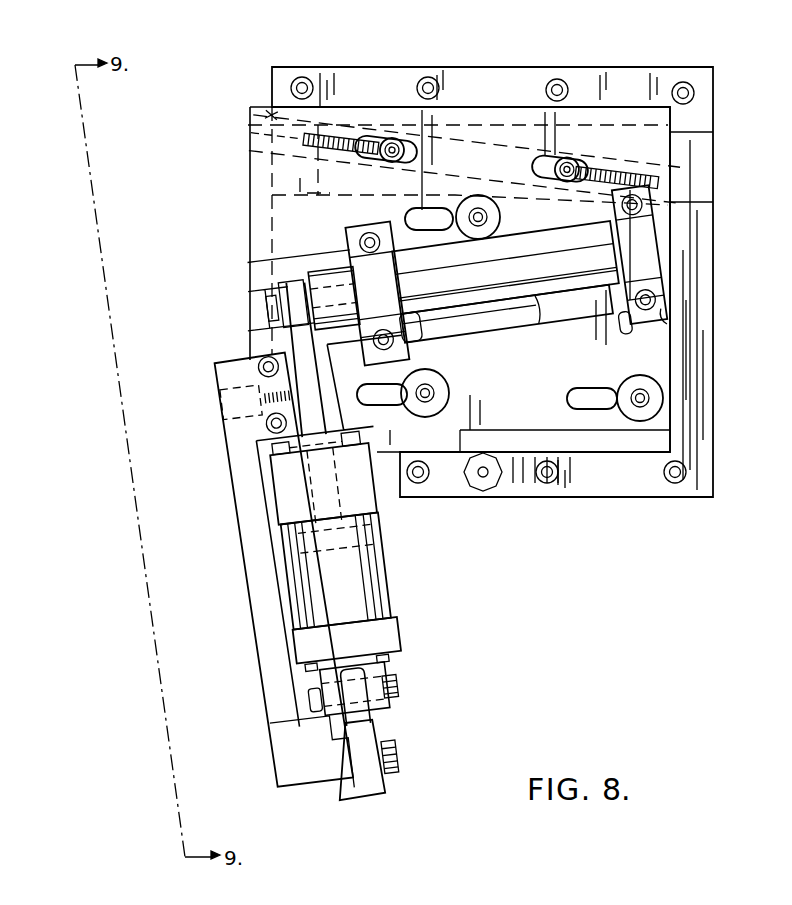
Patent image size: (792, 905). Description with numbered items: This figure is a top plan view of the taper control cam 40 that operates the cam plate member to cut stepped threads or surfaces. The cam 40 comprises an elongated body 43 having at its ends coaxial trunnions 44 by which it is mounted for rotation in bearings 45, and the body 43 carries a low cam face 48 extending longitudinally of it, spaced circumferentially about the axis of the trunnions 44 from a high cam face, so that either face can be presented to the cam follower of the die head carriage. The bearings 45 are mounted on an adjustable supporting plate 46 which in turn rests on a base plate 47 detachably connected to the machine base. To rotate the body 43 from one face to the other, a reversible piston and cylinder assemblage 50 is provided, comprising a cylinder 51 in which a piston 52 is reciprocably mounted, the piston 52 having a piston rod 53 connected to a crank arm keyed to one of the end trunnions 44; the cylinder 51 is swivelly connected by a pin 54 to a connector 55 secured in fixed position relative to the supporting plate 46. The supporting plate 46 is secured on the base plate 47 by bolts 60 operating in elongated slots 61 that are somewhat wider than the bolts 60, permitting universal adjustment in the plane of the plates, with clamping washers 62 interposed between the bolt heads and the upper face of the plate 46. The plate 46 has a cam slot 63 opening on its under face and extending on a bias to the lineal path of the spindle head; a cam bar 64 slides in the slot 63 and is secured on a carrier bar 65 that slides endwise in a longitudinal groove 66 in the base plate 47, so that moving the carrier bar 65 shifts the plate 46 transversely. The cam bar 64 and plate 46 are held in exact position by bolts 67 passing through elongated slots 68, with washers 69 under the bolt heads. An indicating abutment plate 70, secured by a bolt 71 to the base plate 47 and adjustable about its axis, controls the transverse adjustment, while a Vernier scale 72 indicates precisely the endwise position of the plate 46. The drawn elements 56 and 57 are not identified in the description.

The cam 40 is at (520, 338).
The elongated body 43 is at (622, 330).
The trunnions 44 is at (404, 298).
The bearings 45 is at (385, 365).
The adjustable supporting plate 46 is at (671, 362).
The base plate 47 is at (714, 376).
The low cam face 48 is at (538, 318).
The piston and cylinder assemblage 50 is at (282, 583).
The cylinder 51 is at (372, 590).
The piston 52 is at (262, 537).
The piston rod 53 is at (265, 332).
The pin 54 is at (397, 690).
The connector 55 is at (372, 730).
The slide plate 56 is at (256, 622).
The bearing block 57 is at (330, 268).
The bolts 60 is at (490, 217).
The elongated slots 61 is at (405, 215).
The clamping washers 62 is at (462, 198).
The cam slot 63 is at (268, 133).
The cam bar 64 is at (262, 126).
The carrier bar 65 is at (290, 185).
The longitudinal groove 66 is at (300, 192).
The bolts 67 is at (391, 138).
The elongated slots 68 is at (410, 137).
The washers 69 is at (375, 140).
The indicating abutment plate 70 is at (465, 487).
The bolt 71 is at (488, 490).
The Vernier scale 72 is at (585, 450).